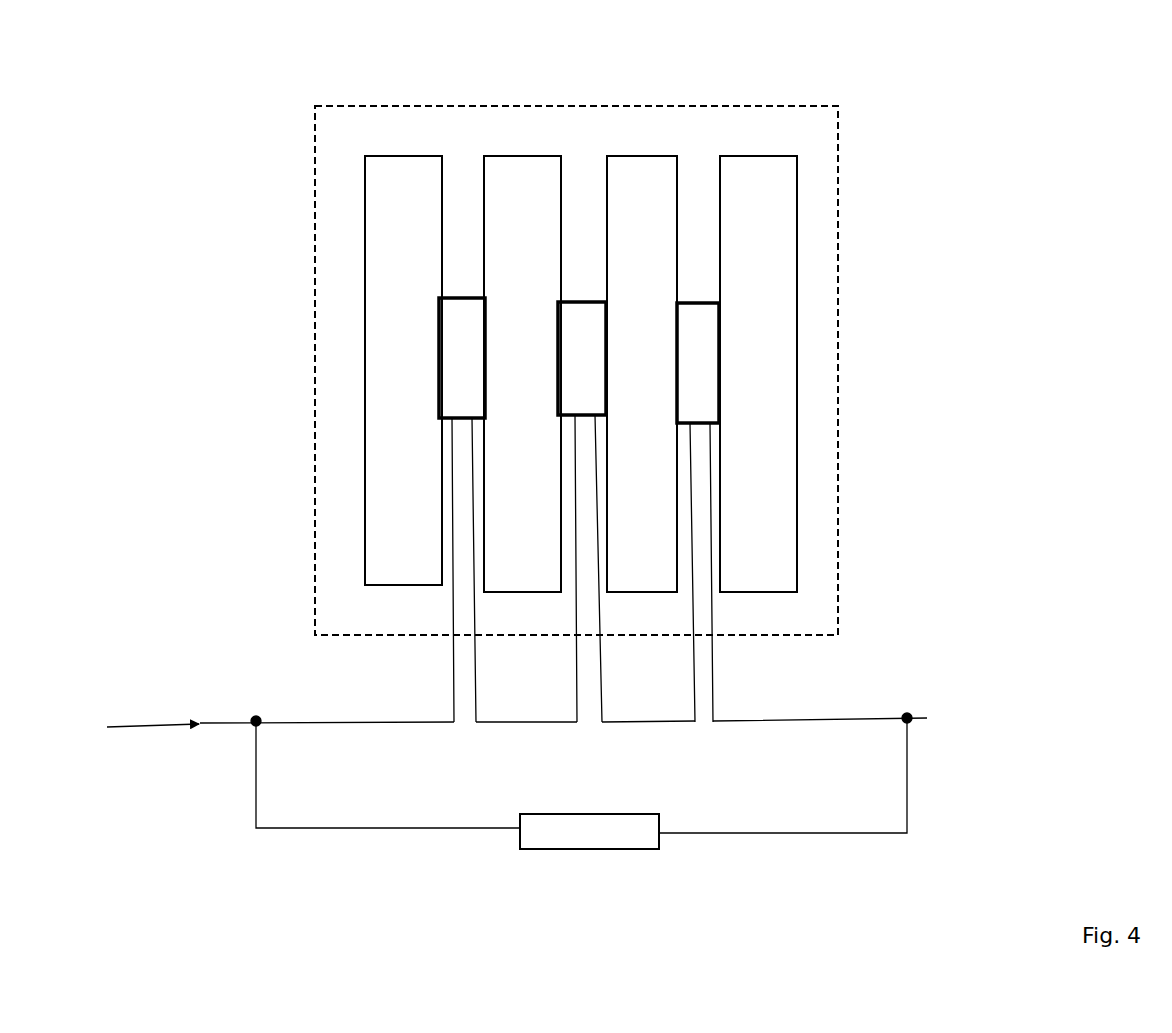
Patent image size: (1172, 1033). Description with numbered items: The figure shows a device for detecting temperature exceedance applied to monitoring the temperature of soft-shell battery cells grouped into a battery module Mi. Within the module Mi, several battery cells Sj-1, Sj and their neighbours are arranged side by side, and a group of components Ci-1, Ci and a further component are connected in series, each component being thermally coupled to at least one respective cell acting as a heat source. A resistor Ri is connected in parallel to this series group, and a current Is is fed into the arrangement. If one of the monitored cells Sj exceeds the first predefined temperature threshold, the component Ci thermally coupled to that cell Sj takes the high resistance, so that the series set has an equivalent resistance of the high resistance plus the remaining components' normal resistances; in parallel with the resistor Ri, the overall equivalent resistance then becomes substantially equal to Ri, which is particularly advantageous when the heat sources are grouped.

The battery module Mi is at (846, 168).
The battery cell Sj-1 is at (399, 177).
The battery cell Sj is at (519, 189).
The component Ci-1 is at (461, 297).
The component Ci is at (588, 300).
The current Is is at (153, 698).
The resistor Ri is at (607, 819).